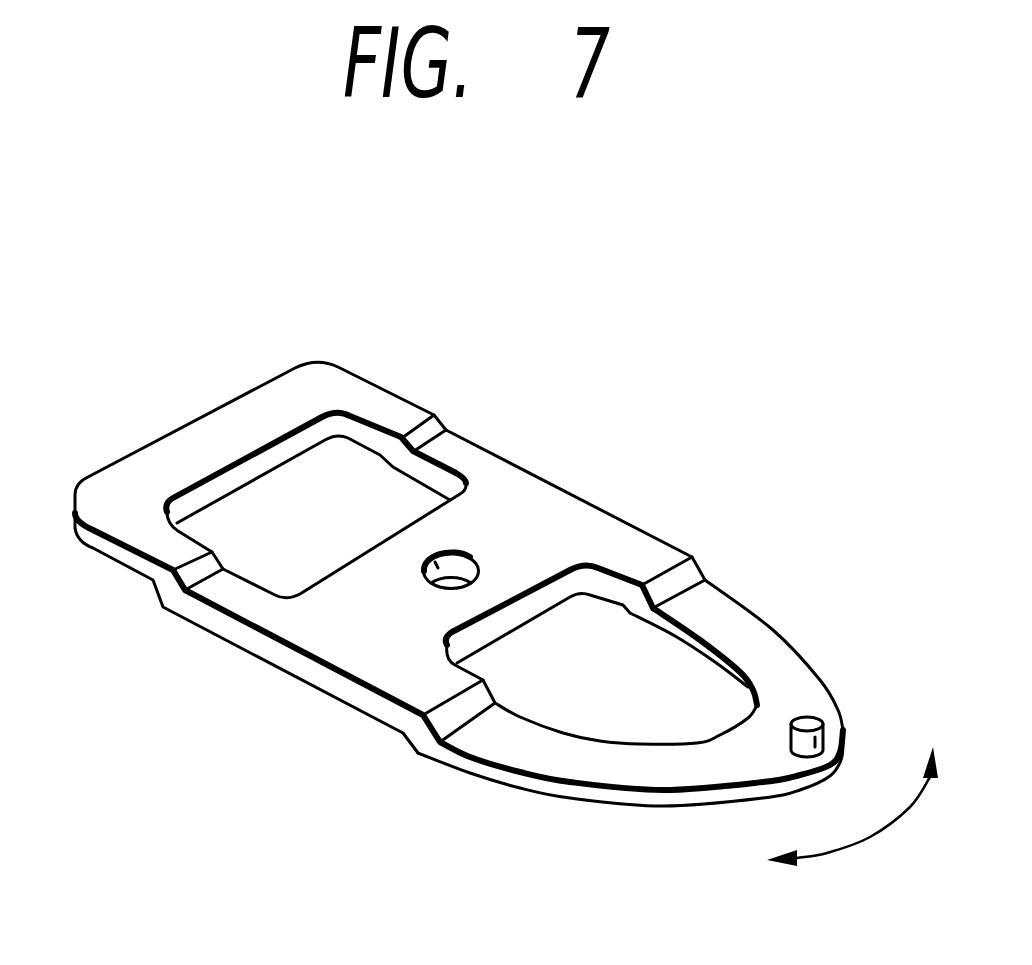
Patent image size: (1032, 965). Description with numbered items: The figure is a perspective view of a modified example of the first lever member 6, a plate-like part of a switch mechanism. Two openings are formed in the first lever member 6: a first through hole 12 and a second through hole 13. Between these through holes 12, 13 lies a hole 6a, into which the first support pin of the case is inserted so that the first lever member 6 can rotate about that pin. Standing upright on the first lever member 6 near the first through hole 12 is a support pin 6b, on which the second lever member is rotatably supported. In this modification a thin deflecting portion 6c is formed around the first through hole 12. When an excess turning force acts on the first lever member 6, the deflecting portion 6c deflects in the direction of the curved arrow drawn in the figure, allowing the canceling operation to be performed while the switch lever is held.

The first lever member 6 is at (570, 470).
The hole 6a is at (430, 552).
The support pin 6b is at (808, 720).
The deflecting portion 6c is at (773, 635).
The first through hole 12 is at (583, 630).
The second through hole 13 is at (270, 493).